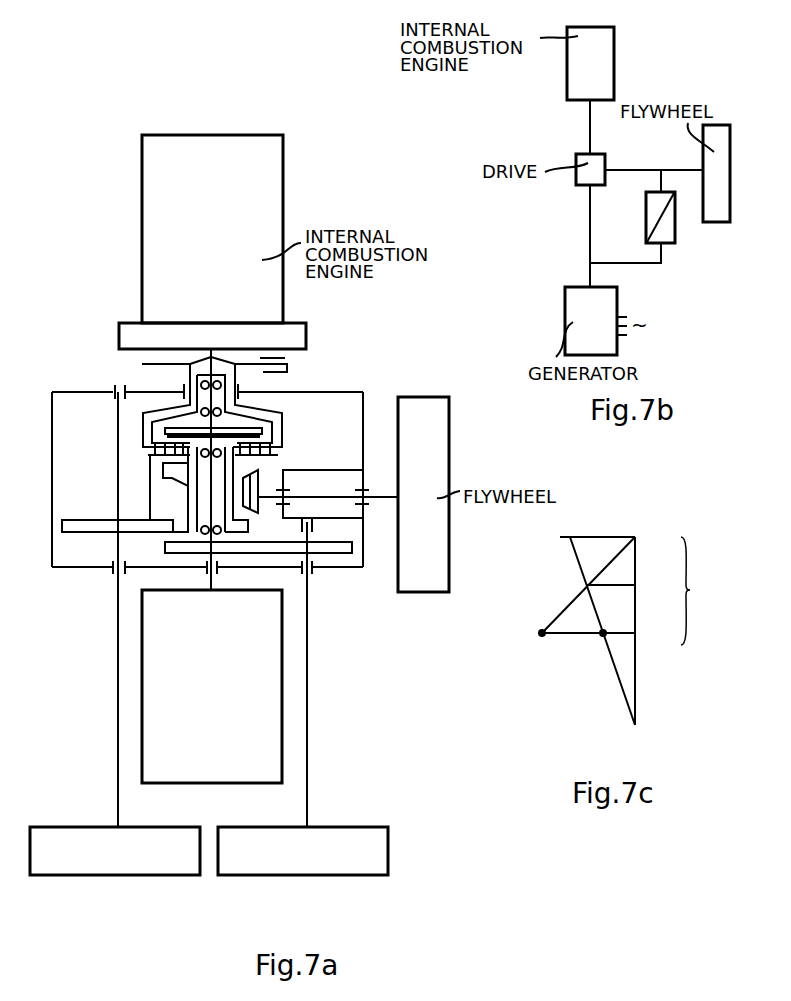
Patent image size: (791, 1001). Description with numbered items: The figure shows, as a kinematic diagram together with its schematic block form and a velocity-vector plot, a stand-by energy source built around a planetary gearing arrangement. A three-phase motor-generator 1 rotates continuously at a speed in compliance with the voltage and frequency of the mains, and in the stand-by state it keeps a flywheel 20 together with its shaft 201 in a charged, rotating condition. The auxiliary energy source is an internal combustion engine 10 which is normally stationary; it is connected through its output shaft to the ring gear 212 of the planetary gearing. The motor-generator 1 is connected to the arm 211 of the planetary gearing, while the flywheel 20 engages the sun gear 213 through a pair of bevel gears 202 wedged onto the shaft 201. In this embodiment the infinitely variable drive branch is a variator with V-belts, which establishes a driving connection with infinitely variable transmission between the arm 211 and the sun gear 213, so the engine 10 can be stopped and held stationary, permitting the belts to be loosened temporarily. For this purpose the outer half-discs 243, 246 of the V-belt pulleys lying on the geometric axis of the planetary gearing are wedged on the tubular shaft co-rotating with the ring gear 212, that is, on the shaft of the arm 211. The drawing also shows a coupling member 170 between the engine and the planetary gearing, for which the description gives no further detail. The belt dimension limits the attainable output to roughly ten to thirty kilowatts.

In FIG. 7a, the internal combustion engine 10 is at (275, 186).
In FIG. 7c, the internal combustion engine 10 is at (611, 538).
In FIG. 7a, the flywheel 20 is at (423, 413).
In FIG. 7c, the flywheel 20 is at (601, 633).
In FIG. 7a, the motor-generator 1 is at (272, 700).
In FIG. 7c, the motor-generator 1 is at (621, 585).
In FIG. 7a, the coupling 170 is at (289, 368).
In FIG. 7a, the arm 211 is at (255, 437).
In FIG. 7a, the ring gear 212 is at (150, 444).
In FIG. 7a, the sun gear 213 is at (196, 463).
In FIG. 7a, the pair of bevel gears 202 is at (253, 513).
In FIG. 7a, the shaft 201 is at (336, 518).
In FIG. 7a, the outer half-disc 243 is at (72, 840).
In FIG. 7a, the outer half-disc 246 is at (364, 840).